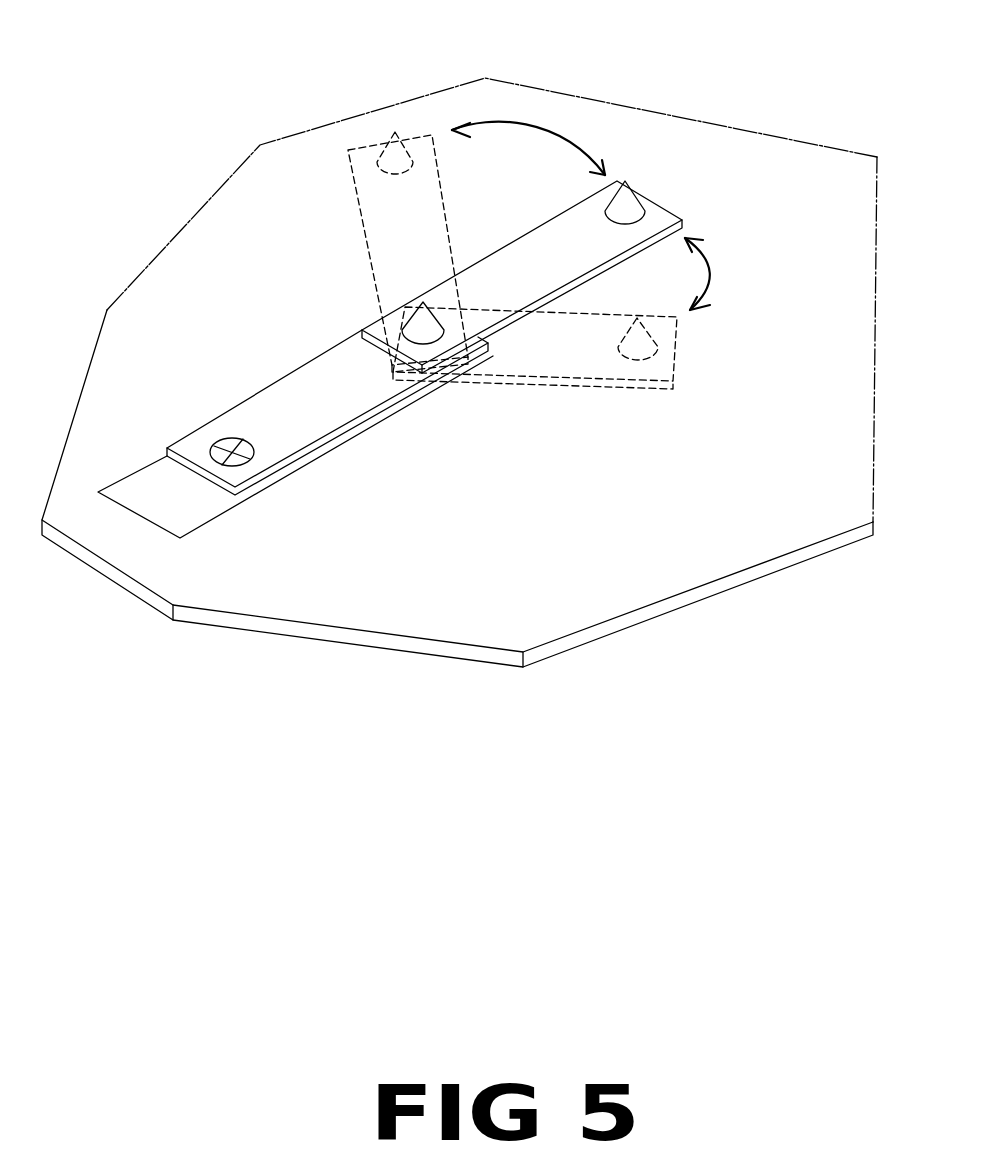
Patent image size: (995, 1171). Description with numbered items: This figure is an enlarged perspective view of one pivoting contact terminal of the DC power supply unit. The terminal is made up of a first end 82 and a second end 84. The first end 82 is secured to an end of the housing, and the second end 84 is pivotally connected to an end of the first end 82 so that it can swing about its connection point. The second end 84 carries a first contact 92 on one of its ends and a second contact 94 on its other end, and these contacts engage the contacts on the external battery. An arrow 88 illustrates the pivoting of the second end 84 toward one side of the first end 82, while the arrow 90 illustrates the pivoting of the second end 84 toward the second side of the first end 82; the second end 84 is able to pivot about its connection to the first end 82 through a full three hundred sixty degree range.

The first end 82 is at (272, 447).
The second end 84 is at (563, 232).
The arrow 88 is at (713, 268).
The arrow 90 is at (533, 125).
The first contact 92 is at (425, 327).
The second contact 94 is at (637, 208).